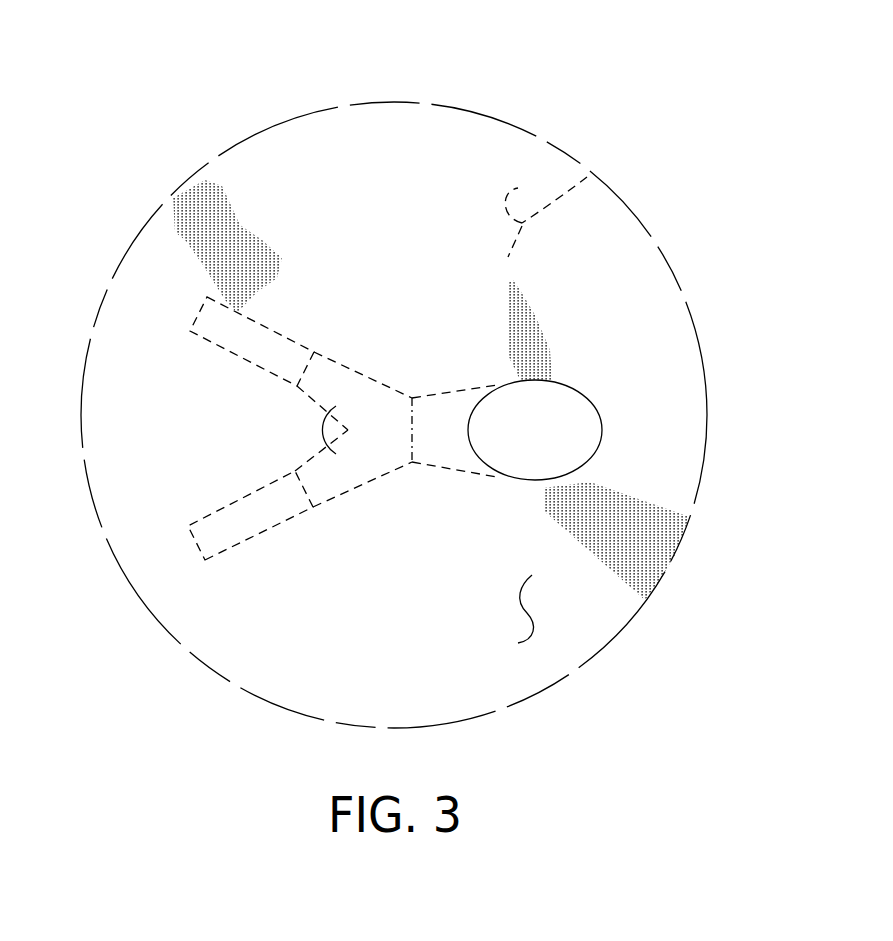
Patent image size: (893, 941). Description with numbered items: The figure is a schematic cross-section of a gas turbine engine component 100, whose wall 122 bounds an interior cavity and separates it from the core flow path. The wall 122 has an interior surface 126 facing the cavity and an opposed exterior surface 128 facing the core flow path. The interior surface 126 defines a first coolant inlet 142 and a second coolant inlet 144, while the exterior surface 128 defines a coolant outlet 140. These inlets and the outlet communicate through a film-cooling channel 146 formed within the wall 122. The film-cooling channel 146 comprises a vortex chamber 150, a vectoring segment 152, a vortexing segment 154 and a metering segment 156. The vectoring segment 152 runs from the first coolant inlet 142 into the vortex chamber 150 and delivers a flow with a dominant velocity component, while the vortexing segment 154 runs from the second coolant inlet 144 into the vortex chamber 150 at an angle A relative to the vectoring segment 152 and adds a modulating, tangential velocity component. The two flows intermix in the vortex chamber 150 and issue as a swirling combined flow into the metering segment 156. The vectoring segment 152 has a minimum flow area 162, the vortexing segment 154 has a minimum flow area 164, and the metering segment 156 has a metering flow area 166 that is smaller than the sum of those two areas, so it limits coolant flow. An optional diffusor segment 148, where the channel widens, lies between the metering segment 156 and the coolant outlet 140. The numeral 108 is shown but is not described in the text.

The gas turbine engine component 100 is at (198, 738).
The substrate 108 is at (410, 675).
The wall 122 is at (317, 110).
The interior surface 126 is at (587, 177).
The exterior surface 128 is at (535, 622).
The coolant outlet 140 is at (525, 427).
The first coolant inlet 142 is at (217, 328).
The second coolant inlet 144 is at (222, 532).
The film-cooling channel 146 is at (417, 490).
The diffusor segment 148 is at (579, 442).
The vortex chamber 150 is at (397, 442).
The vectoring segment 152 is at (288, 366).
The vortexing segment 154 is at (282, 522).
The metering segment 156 is at (458, 443).
The minimum flow area 162 is at (306, 373).
The minimum flow area 164 is at (310, 497).
The metering flow area 166 is at (414, 413).
The angle A is at (323, 430).